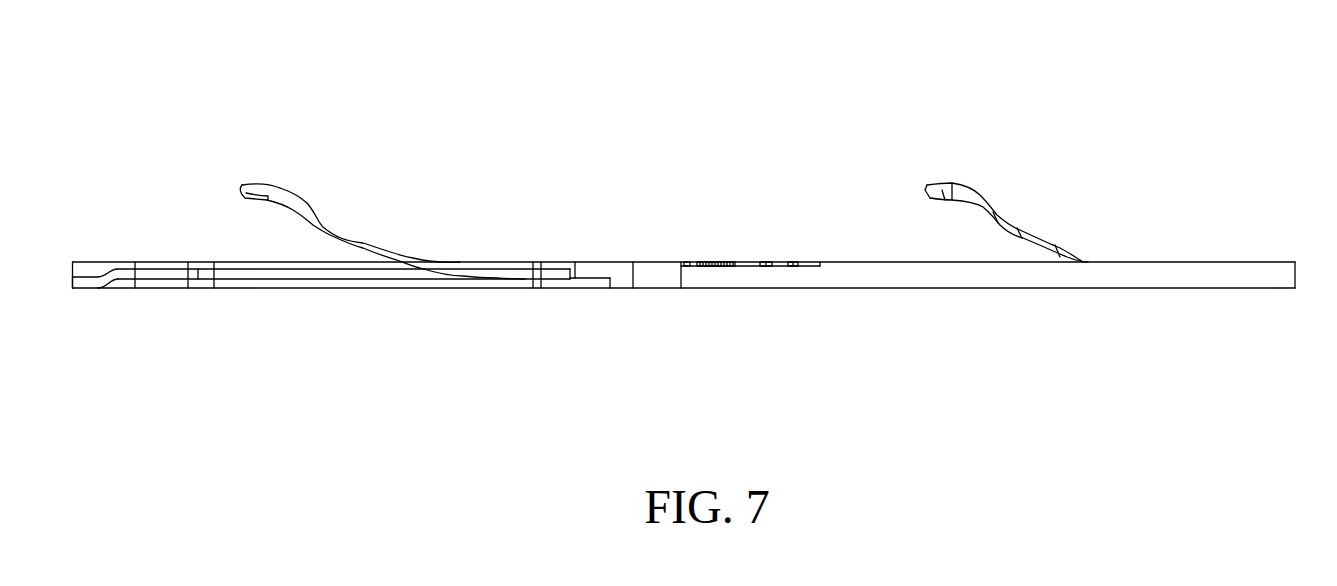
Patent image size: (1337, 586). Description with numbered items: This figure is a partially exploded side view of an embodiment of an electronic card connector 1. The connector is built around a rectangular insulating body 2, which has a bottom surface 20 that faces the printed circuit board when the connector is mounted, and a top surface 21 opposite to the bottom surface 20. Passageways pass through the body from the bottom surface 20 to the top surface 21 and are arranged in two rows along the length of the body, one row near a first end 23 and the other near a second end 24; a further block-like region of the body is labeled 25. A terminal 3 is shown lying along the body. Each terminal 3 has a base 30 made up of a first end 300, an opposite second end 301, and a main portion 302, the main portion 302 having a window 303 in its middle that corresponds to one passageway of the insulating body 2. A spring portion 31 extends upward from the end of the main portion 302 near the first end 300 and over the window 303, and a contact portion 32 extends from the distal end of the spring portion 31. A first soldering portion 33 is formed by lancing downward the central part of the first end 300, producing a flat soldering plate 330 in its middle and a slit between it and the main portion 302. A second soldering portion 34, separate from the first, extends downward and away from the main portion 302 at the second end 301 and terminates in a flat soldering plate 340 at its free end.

The electronic card connector 1 is at (1033, 63).
The insulating body 2 is at (1211, 288).
The bottom surface 20 is at (1168, 290).
The top surface 21 is at (1212, 262).
The first end 23 is at (1295, 275).
The second end 24 is at (72, 268).
The housing block 25 is at (625, 282).
The terminal 3 is at (935, 186).
The base 30 is at (176, 280).
The first end 300 is at (552, 268).
The second end 301 is at (145, 290).
The main portion 302 is at (523, 275).
The window 303 is at (297, 282).
The spring portion 31 is at (412, 260).
The contact portion 32 is at (262, 183).
The first soldering portion 33 is at (585, 282).
The flat soldering plate 330 is at (607, 278).
The second soldering portion 34 is at (90, 282).
The flat soldering plate 340 is at (72, 280).